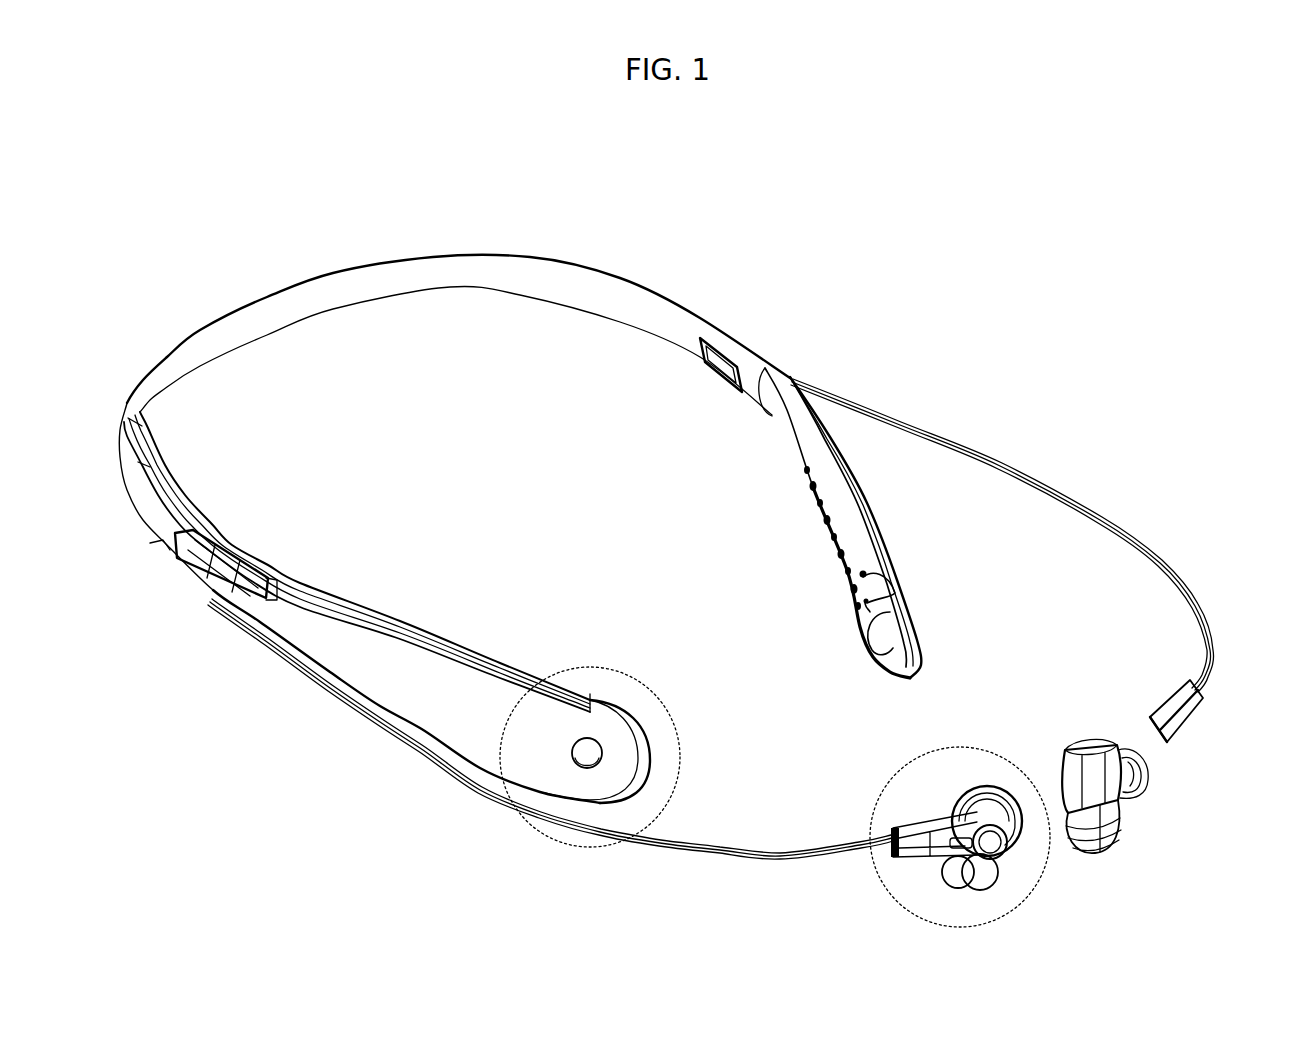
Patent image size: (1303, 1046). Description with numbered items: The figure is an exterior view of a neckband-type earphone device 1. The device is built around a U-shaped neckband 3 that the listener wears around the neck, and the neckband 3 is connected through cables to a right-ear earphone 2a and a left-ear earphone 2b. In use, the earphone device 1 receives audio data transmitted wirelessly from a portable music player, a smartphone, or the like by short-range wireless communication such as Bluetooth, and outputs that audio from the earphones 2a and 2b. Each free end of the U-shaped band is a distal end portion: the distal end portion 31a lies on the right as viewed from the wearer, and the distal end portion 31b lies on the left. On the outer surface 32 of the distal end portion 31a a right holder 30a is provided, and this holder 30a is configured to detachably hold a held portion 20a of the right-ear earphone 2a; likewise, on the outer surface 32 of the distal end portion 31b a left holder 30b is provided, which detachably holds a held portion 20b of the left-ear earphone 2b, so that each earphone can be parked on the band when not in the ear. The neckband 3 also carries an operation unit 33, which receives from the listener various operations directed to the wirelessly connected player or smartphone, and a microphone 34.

The earphone device 1 is at (1215, 221).
The neckband 3 is at (618, 276).
The outer surface 32 is at (400, 668).
The distal end portion 31a is at (686, 658).
The holder 30a is at (587, 748).
The distal end portion 31b is at (893, 517).
The holder 30b is at (923, 637).
The operation unit 33 is at (822, 512).
The microphone 34 is at (852, 572).
The right-ear earphone 2a is at (985, 780).
The held portion 20a is at (993, 842).
The left-ear earphone 2b is at (1100, 737).
The held portion 20b is at (1150, 793).